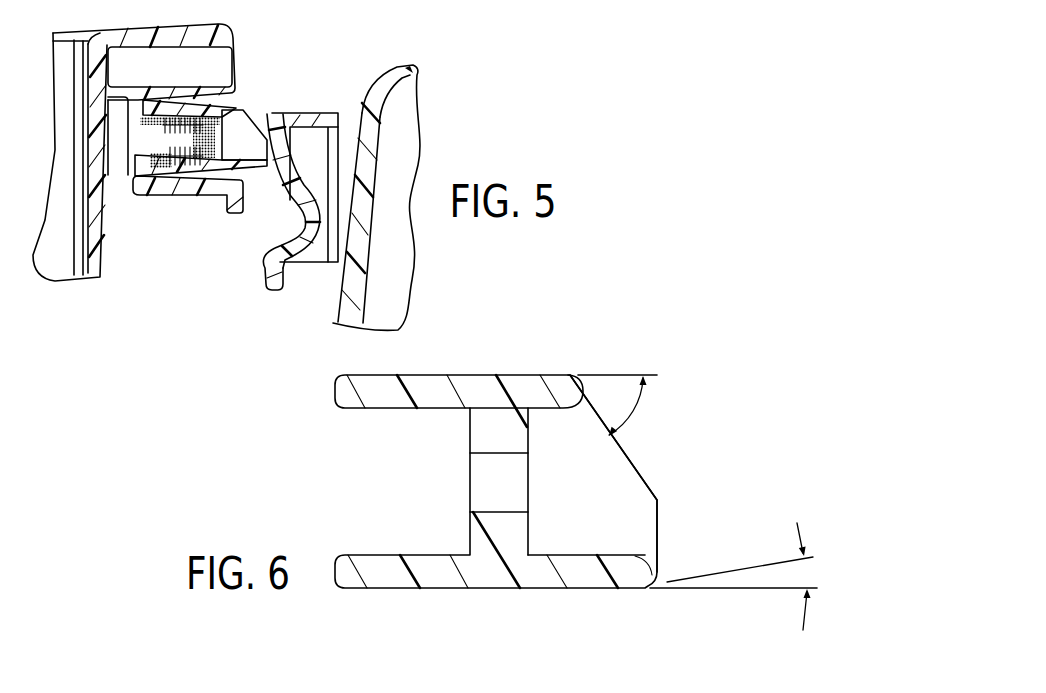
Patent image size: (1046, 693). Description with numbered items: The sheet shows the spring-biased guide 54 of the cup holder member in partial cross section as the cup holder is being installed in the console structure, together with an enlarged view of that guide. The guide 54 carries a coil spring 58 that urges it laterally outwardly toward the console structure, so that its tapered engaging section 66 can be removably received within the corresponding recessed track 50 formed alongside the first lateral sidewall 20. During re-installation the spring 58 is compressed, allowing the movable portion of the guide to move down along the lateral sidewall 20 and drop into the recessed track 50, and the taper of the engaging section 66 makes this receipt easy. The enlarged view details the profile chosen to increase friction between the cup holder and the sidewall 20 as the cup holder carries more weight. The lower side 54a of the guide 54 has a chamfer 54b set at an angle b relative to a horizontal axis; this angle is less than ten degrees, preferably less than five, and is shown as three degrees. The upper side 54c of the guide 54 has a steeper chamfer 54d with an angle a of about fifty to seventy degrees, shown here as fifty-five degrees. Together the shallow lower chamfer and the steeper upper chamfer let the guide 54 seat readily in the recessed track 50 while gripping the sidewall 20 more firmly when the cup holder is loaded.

In FIG. 5, the first lateral sidewall 20 is at (337, 312).
In FIG. 5, the recessed track 50 is at (262, 222).
In FIG. 5, the spring-biased guide 54 is at (255, 95).
In FIG. 6, the spring-biased guide 54 is at (563, 331).
In FIG. 6, the lower side of the guide 54a is at (495, 590).
In FIG. 6, the chamfer 54b is at (634, 590).
In FIG. 6, the upper side of the guide 54c is at (470, 375).
In FIG. 6, the chamfer 54d is at (640, 473).
In FIG. 5, the spring 58 is at (174, 170).
In FIG. 5, the tapered engaging section 66 is at (241, 131).
In FIG. 6, the angle of upper chamfer a is at (637, 412).
In FIG. 6, the angle of lower chamfer b is at (810, 577).